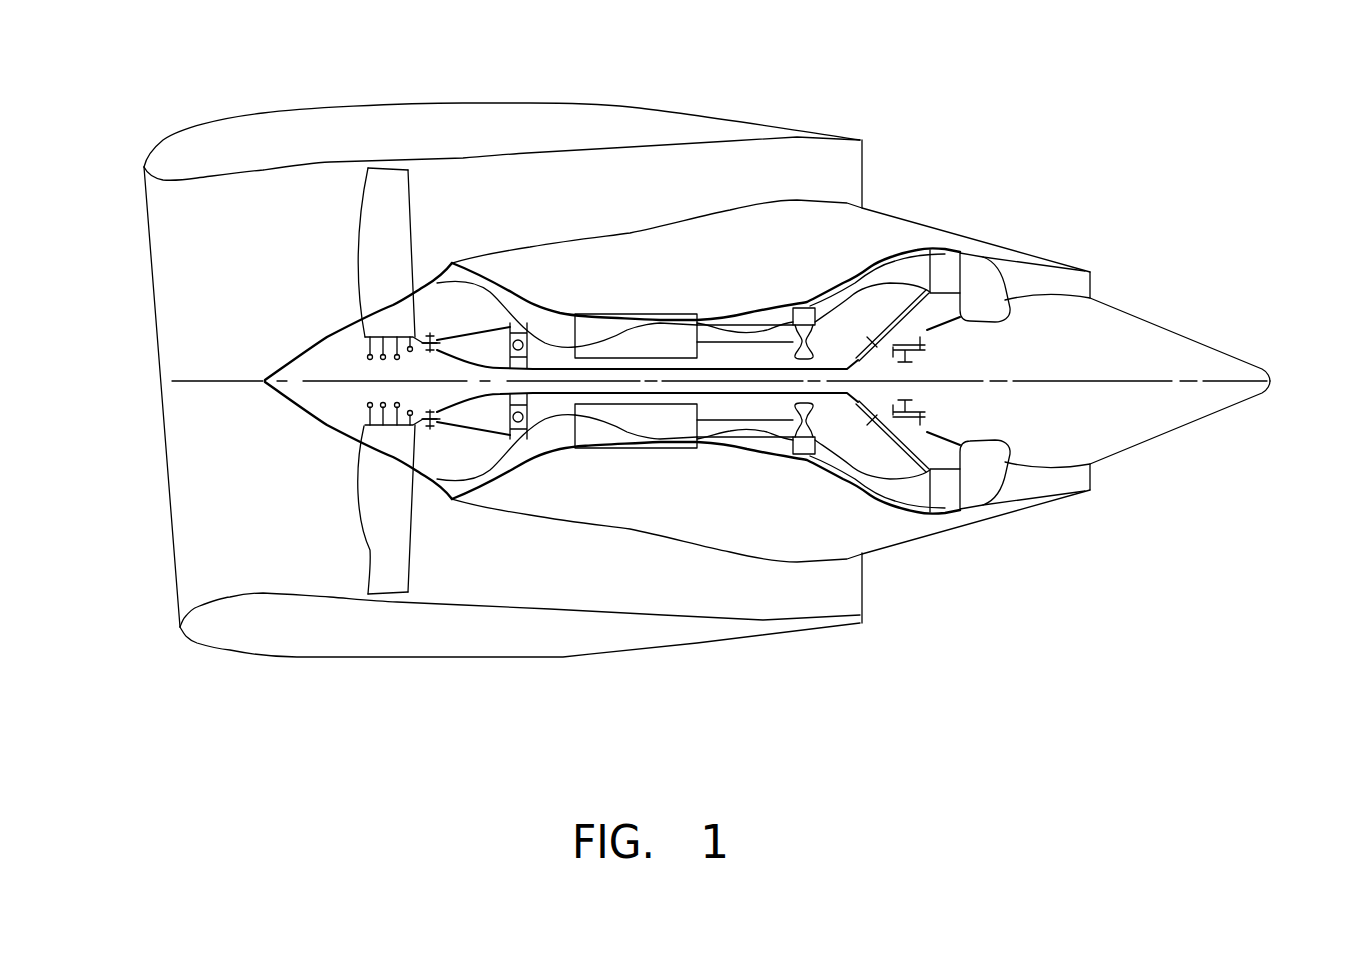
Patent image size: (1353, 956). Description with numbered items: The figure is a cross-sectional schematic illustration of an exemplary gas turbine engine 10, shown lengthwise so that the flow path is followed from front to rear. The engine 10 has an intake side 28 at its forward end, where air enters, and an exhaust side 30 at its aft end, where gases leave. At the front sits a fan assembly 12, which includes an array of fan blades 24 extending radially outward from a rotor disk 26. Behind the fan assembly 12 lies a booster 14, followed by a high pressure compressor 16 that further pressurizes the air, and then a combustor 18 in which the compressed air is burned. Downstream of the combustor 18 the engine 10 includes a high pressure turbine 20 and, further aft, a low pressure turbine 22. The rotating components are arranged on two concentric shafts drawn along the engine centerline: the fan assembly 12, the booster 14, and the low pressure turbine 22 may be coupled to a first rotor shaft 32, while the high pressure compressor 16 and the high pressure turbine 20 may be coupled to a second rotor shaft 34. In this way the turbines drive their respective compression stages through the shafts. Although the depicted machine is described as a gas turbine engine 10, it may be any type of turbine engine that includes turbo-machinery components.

The gas turbine engine 10 is at (740, 68).
The fan assembly 12 is at (390, 517).
The booster 14 is at (480, 275).
The high pressure compressor 16 is at (601, 323).
The combustor 18 is at (767, 318).
The high pressure turbine 20 is at (805, 448).
The low pressure turbine 22 is at (893, 267).
The fan blades 24 is at (382, 250).
The rotor disk 26 is at (325, 410).
The intake side 28 is at (187, 210).
The exhaust side 30 is at (905, 173).
The first rotor shaft 32 is at (643, 430).
The second rotor shaft 34 is at (607, 393).